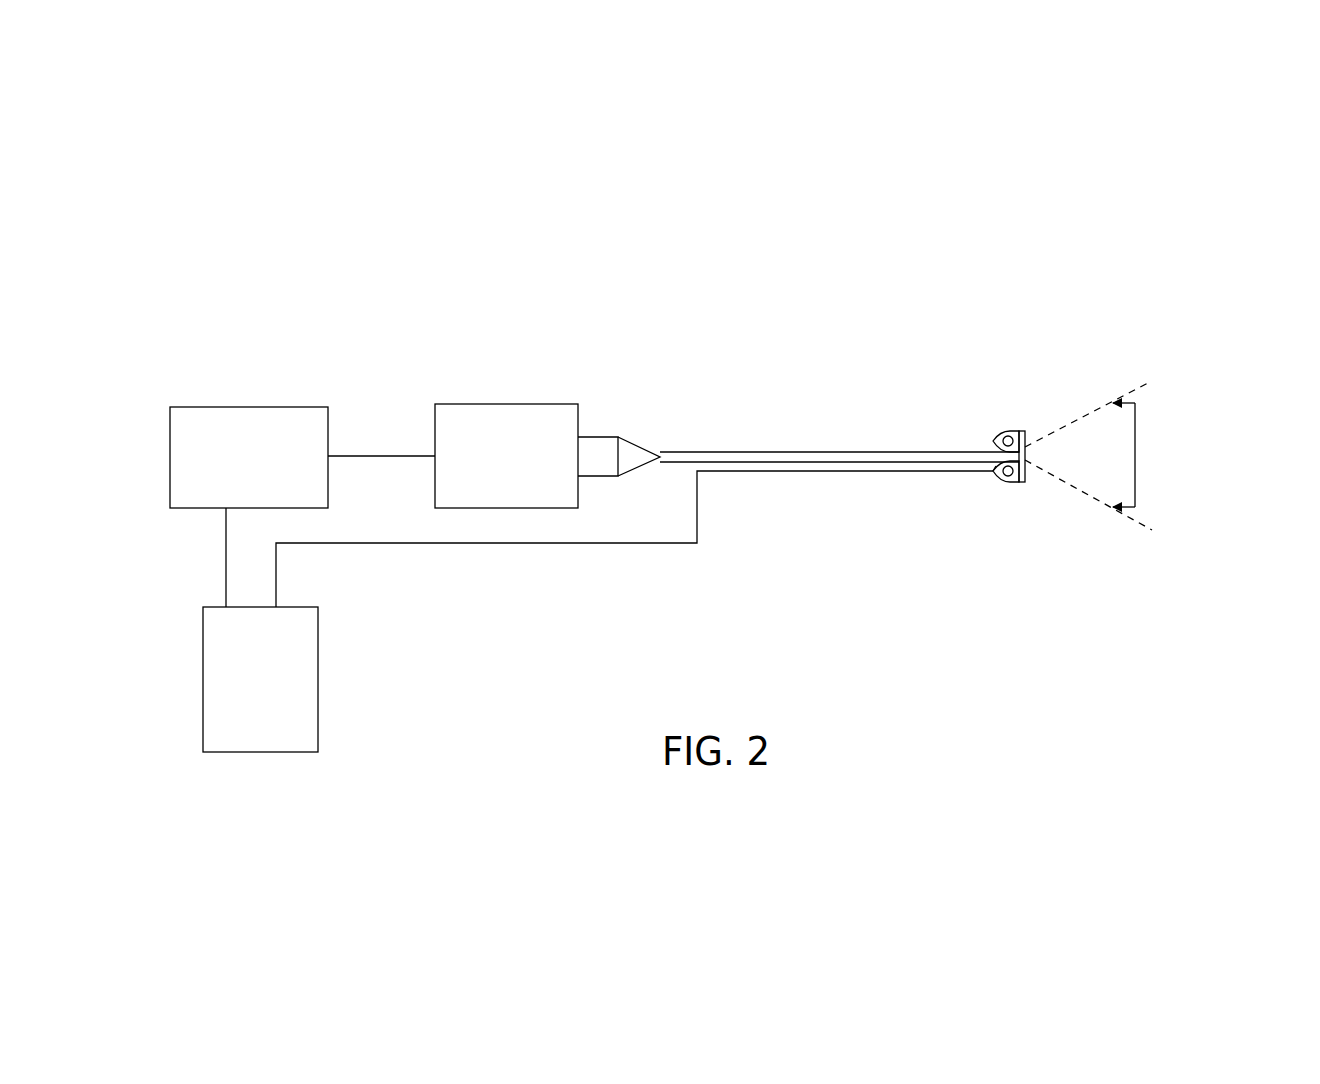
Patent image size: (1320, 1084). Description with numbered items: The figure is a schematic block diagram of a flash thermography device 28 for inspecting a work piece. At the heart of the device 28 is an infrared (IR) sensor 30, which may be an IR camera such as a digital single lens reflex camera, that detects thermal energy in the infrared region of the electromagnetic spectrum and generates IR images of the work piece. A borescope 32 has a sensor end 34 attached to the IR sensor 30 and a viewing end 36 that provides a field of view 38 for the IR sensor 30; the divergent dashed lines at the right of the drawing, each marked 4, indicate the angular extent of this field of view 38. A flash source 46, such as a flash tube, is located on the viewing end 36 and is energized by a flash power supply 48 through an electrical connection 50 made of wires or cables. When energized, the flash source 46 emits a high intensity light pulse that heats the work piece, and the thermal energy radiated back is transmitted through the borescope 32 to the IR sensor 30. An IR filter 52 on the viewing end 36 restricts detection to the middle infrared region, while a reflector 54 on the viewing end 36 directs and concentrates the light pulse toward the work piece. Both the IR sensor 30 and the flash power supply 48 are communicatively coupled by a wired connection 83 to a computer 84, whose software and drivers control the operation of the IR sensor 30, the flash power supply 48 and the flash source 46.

The flash thermography device 28 is at (1003, 235).
The infrared (IR) sensor 30 is at (522, 404).
The borescope 32 is at (718, 452).
The sensor end 34 is at (623, 437).
The viewing end 36 is at (989, 465).
The field of view 38 is at (1148, 457).
The field of view boundary 4 is at (1121, 457).
The flash source 46 is at (1008, 485).
The flash power supply 48 is at (320, 665).
The electrical connection 50 is at (555, 545).
The IR filter 52 is at (1027, 485).
The reflector 54 is at (988, 478).
The wired connection 83 is at (355, 456).
The computer 84 is at (247, 407).